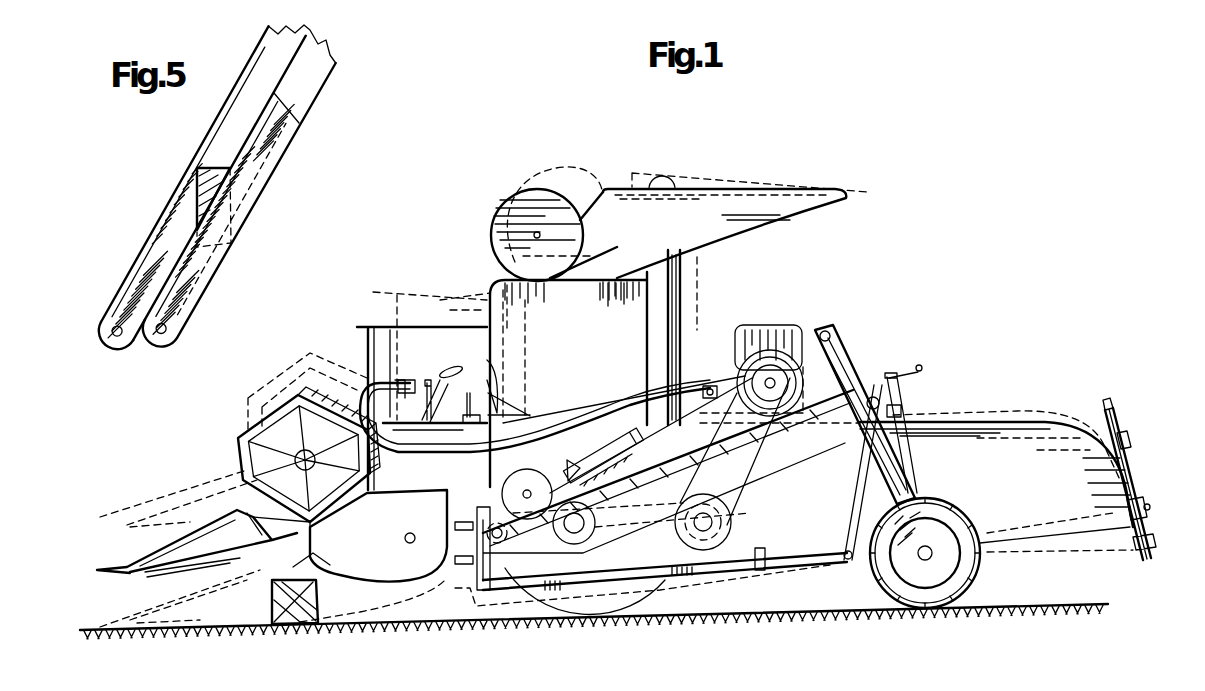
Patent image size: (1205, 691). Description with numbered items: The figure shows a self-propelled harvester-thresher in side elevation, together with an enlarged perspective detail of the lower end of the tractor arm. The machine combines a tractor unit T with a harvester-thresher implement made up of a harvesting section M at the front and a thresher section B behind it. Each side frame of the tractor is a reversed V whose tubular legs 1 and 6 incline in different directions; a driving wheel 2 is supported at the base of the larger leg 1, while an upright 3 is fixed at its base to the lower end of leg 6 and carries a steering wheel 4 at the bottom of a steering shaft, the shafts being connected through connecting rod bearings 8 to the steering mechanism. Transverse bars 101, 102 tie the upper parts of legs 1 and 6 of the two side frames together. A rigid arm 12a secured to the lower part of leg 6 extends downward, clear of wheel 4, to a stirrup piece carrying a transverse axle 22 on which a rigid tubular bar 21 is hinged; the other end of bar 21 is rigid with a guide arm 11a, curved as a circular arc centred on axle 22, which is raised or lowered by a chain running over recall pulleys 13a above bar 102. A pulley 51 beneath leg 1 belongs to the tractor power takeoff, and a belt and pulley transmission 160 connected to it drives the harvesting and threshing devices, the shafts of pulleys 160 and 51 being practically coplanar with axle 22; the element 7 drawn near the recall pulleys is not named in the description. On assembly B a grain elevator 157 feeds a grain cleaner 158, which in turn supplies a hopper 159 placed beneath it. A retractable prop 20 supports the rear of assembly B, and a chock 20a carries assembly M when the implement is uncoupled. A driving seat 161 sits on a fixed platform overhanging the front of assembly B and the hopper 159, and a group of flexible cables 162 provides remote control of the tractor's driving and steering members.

In FIG. 1, the grain cleaner 158 is at (588, 212).
In FIG. 1, the hopper 159 is at (492, 286).
In FIG. 1, the grain elevator 157 is at (690, 260).
In FIG. 1, the driving seat 161 is at (365, 326).
In FIG. 1, the flexible cables 162 is at (536, 445).
In FIG. 1, the recall pulleys 13a is at (703, 386).
In FIG. 1, the bar 102 is at (710, 392).
In FIG. 1, the drive pulley 7 is at (775, 345).
In FIG. 1, the tractor unit T is at (806, 333).
In FIG. 1, the bar 101 is at (830, 336).
In FIG. 1, the leg 6 is at (867, 397).
In FIG. 1, the connecting rod bearings 8 is at (920, 366).
In FIG. 1, the upright 3 is at (905, 420).
In FIG. 1, the prop 20 is at (1128, 455).
In FIG. 1, the steering wheel 4 is at (965, 570).
In FIG. 5, the transverse axle 22 is at (167, 323).
In FIG. 1, the transverse axle 22 is at (846, 560).
In FIG. 5, the rigid arm 12a is at (314, 86).
In FIG. 1, the rigid arm 12a is at (852, 526).
In FIG. 1, the pulley 51 is at (733, 520).
In FIG. 1, the thresher section B is at (668, 485).
In FIG. 1, the leg 1 is at (621, 457).
In FIG. 1, the belt and pulley transmission 160 is at (527, 482).
In FIG. 1, the guide arm 11a is at (463, 513).
In FIG. 1, the harvesting section M is at (378, 536).
In FIG. 1, the chock 20a is at (256, 626).
In FIG. 1, the driving wheel 2 is at (603, 612).
In FIG. 1, the tubular bar 21 is at (683, 585).